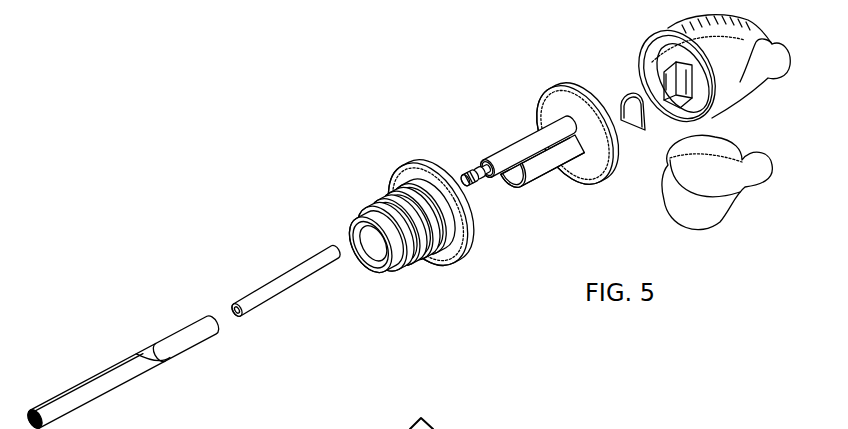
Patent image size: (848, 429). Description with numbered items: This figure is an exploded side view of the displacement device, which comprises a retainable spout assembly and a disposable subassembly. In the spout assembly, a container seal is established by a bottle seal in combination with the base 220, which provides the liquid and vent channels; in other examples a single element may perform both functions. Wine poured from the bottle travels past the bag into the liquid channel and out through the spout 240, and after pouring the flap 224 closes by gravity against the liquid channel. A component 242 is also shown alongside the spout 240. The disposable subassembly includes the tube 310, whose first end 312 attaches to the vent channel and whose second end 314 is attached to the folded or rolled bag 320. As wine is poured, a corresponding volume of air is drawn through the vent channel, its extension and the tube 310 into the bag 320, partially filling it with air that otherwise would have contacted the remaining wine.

The base 220 is at (539, 154).
The flap 224 is at (622, 83).
The spout 240 is at (707, 75).
The cap 242 is at (723, 183).
The tube 310 is at (233, 292).
The first end of tube 312 is at (328, 242).
The second end of vent tube 314 is at (377, 183).
The bag 320 is at (123, 371).